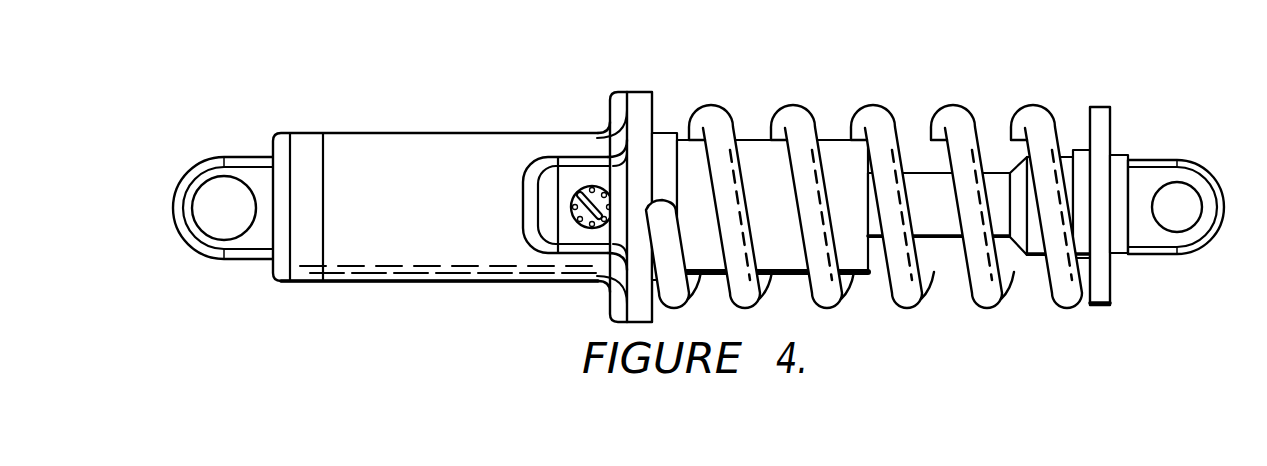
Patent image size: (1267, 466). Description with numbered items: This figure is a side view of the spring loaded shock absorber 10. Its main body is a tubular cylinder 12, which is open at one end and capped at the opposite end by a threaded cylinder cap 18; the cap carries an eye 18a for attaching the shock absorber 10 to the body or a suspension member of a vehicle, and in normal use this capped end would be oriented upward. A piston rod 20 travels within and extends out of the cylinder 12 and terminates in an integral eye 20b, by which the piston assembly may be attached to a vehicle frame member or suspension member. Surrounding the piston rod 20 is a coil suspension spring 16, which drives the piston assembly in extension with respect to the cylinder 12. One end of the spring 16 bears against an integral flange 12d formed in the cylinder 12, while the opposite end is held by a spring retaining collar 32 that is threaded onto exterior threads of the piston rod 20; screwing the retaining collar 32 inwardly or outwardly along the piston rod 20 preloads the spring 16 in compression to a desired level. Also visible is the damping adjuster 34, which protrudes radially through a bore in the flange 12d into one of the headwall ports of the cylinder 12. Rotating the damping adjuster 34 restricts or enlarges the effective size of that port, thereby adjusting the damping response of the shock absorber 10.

The spring loaded shock absorber 10 is at (350, 109).
The tubular cylinder 12 is at (443, 143).
The integral flange 12d is at (654, 110).
The coil suspension spring 16 is at (962, 105).
The threaded cylinder cap 18 is at (257, 162).
The eye 18a is at (207, 193).
The piston rod 20 is at (914, 188).
The integral eye 20b is at (1190, 203).
The spring retaining collar 32 is at (1100, 125).
The damping adjuster 34 is at (583, 190).